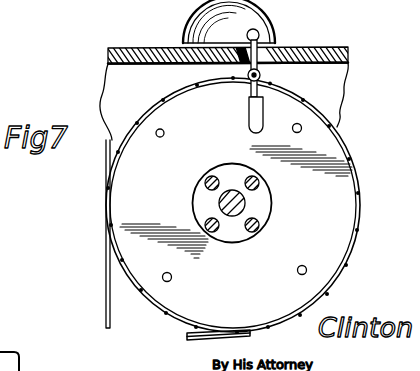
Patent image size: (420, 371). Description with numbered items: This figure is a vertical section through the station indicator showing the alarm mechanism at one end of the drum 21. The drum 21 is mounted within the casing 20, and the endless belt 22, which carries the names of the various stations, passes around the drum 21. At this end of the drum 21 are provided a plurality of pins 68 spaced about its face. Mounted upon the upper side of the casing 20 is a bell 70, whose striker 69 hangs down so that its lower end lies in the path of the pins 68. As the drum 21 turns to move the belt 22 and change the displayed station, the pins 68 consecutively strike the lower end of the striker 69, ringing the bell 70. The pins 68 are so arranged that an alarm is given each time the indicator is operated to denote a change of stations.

The casing 20 is at (347, 48).
The drum 21 is at (233, 208).
The endless belt 22 is at (106, 238).
The pins 68 is at (159, 137).
The striker 69 is at (248, 117).
The bell 70 is at (268, 22).